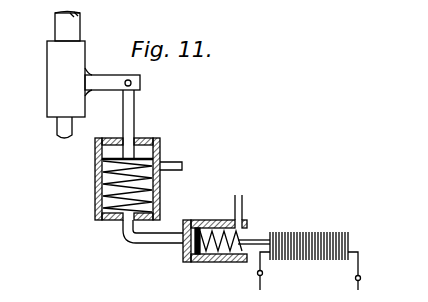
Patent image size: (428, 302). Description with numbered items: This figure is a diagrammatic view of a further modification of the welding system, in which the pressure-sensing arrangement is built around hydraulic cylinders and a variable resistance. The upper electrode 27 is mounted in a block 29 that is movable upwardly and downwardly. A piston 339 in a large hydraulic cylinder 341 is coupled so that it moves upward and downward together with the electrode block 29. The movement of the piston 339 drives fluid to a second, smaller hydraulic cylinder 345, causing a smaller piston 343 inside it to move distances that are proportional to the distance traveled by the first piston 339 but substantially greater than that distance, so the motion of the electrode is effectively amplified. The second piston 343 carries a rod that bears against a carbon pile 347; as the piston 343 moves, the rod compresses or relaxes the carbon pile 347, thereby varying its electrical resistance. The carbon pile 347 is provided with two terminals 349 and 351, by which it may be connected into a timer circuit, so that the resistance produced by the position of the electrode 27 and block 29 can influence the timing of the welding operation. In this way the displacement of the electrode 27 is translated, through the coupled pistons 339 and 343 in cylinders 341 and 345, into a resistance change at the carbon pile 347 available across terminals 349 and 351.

The block 29 is at (50, 97).
The upper electrode 27 is at (58, 128).
The piston 339 is at (140, 152).
The large hydraulic cylinder 341 is at (95, 192).
The smaller piston 343 is at (182, 250).
The second hydraulic cylinder 345 is at (218, 257).
The carbon pile 347 is at (307, 234).
The terminal 349 is at (263, 275).
The terminal 351 is at (361, 279).